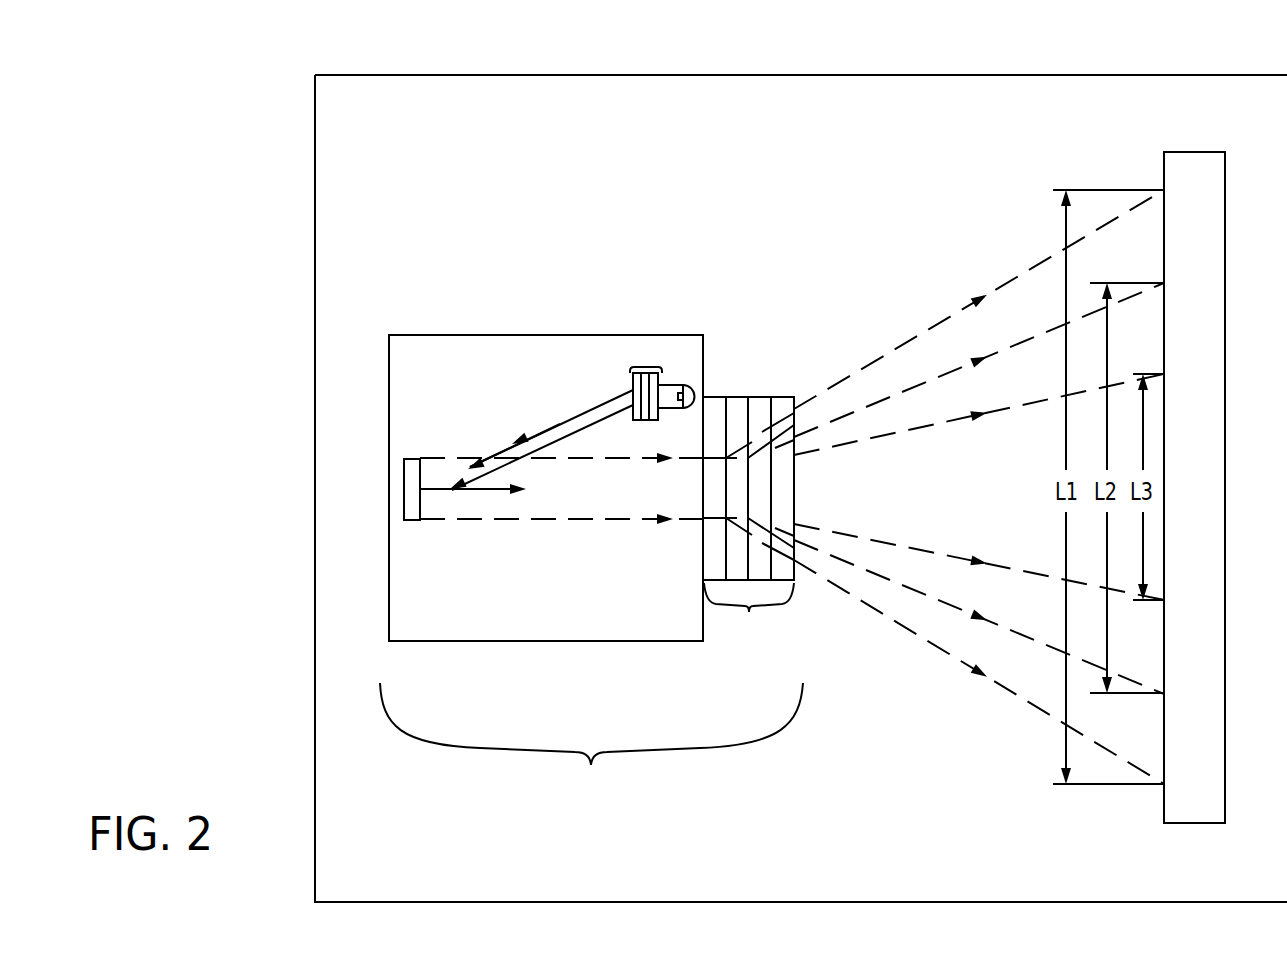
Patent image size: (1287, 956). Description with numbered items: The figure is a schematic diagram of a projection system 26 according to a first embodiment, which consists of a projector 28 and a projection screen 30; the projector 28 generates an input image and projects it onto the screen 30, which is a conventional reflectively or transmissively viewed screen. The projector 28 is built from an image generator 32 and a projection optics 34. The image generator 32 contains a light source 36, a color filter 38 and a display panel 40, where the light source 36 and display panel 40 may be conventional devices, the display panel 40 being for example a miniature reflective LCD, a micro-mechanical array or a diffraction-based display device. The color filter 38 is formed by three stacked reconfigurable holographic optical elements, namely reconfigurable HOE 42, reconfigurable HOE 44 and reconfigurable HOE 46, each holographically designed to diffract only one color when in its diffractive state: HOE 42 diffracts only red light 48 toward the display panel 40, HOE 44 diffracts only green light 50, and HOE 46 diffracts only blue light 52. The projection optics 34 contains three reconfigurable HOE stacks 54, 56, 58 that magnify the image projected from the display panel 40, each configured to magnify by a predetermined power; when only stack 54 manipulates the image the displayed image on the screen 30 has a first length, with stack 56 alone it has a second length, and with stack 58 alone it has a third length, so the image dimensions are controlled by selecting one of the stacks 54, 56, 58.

The projection system 26 is at (1058, 75).
The projector 28 is at (591, 742).
The projection screen 30 is at (1225, 315).
The image generator 32 is at (525, 641).
The projection optics 34 is at (748, 522).
The light source 36 is at (674, 383).
The color filter 38 is at (646, 379).
The display panel 40 is at (410, 522).
The reconfigurable HOE 42 is at (635, 421).
The reconfigurable HOE 44 is at (643, 421).
The reconfigurable HOE 46 is at (651, 421).
The red light 48 is at (552, 428).
The green light 50 is at (500, 452).
The blue light 52 is at (467, 482).
The reconfigurable HOE stack 54 is at (740, 402).
The reconfigurable HOE stack 56 is at (757, 405).
The reconfigurable HOE stack 58 is at (780, 402).